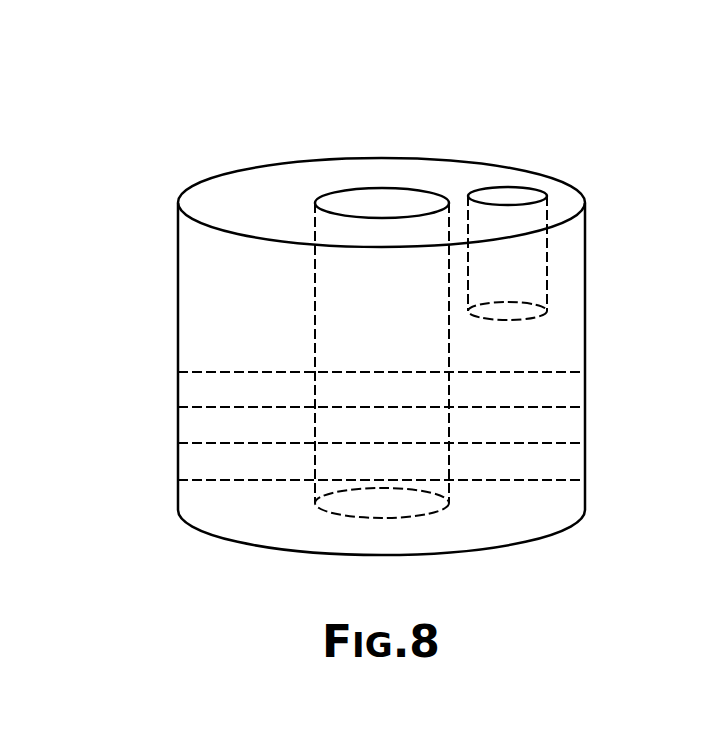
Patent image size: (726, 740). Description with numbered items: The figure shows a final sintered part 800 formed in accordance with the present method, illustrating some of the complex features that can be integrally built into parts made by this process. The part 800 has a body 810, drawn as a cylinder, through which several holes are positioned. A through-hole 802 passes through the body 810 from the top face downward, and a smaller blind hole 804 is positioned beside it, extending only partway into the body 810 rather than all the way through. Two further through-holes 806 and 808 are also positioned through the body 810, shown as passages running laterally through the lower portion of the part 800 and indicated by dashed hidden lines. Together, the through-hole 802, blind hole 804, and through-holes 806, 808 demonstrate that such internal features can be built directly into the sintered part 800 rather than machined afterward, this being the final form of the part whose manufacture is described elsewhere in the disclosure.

The sintered part 800 is at (475, 115).
The through-hole 802 is at (368, 203).
The blind hole 804 is at (513, 193).
The through-hole 806 is at (590, 388).
The through-hole 808 is at (588, 460).
The body 810 is at (178, 283).